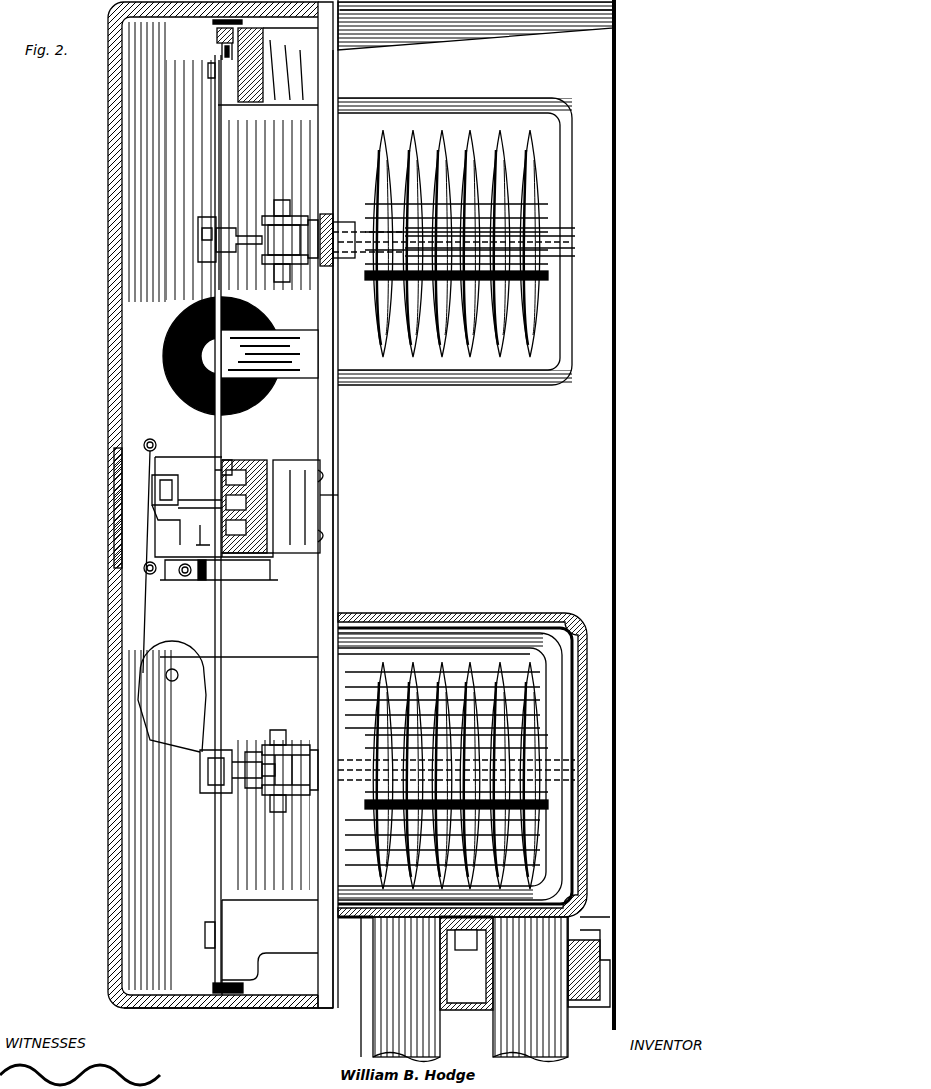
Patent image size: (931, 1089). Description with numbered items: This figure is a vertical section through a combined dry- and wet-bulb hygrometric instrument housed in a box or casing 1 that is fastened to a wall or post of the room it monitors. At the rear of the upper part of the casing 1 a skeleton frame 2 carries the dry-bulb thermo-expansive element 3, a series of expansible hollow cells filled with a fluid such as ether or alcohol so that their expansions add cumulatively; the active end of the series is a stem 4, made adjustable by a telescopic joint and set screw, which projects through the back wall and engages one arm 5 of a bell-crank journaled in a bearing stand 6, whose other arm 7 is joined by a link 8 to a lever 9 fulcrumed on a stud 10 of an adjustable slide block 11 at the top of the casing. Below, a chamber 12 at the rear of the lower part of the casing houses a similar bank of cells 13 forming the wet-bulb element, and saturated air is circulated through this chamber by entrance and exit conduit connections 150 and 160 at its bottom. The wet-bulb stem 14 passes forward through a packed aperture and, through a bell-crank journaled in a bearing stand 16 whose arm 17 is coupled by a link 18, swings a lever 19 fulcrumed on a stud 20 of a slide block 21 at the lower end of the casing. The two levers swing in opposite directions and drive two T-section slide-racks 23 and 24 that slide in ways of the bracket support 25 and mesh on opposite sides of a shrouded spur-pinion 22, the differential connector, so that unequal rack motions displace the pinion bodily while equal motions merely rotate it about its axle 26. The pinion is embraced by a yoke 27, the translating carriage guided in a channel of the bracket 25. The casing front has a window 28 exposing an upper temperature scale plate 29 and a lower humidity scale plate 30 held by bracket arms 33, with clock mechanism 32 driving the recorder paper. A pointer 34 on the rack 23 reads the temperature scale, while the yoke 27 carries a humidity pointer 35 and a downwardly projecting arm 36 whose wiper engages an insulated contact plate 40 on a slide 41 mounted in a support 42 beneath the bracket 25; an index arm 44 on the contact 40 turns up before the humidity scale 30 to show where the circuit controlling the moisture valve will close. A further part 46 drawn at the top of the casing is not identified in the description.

The casing 1 is at (340, 572).
The skeleton frame 2 is at (490, 104).
The thermo-expansive element 3 is at (530, 356).
The stem 4 is at (340, 238).
The arm of bell-crank 5 is at (262, 235).
The bearing stand 6 is at (293, 220).
The other arm of bell-crank 7 is at (246, 235).
The link 8 is at (198, 244).
The lever 9 is at (220, 184).
The stud 10 is at (208, 70).
The adjustable slide block 11 is at (222, 55).
The chamber 12 is at (400, 615).
The cells 13 is at (528, 662).
The stem 14 is at (302, 745).
The bearing stand 16 is at (292, 805).
The arm of bell-crank 17 is at (248, 762).
The link 18 is at (204, 775).
The lever 19 is at (222, 614).
The stud 20 is at (207, 940).
The slide block 21 is at (221, 945).
The shrouded spur-pinion 22 is at (222, 494).
The slide-rack 23 is at (278, 470).
The slide-rack 24 is at (270, 556).
The bracket support 25 is at (325, 470).
The axle 26 is at (322, 494).
The yoke 27 is at (212, 506).
The window 28 is at (115, 525).
The scale plate 29 is at (152, 485).
The scale plate 30 is at (146, 566).
The clock mechanism 32 is at (190, 722).
The bracket arms 33 is at (232, 465).
The pointer 34 is at (215, 480).
The pointer 35 is at (165, 512).
The arm 36 is at (200, 540).
The contact plate 40 is at (220, 995).
The slide 41 is at (202, 582).
The support 42 is at (272, 578).
The arm 44 is at (178, 582).
The top block 46 is at (265, 62).
The entrance conduit connection 150 is at (578, 980).
The exit conduit connection 160 is at (474, 989).